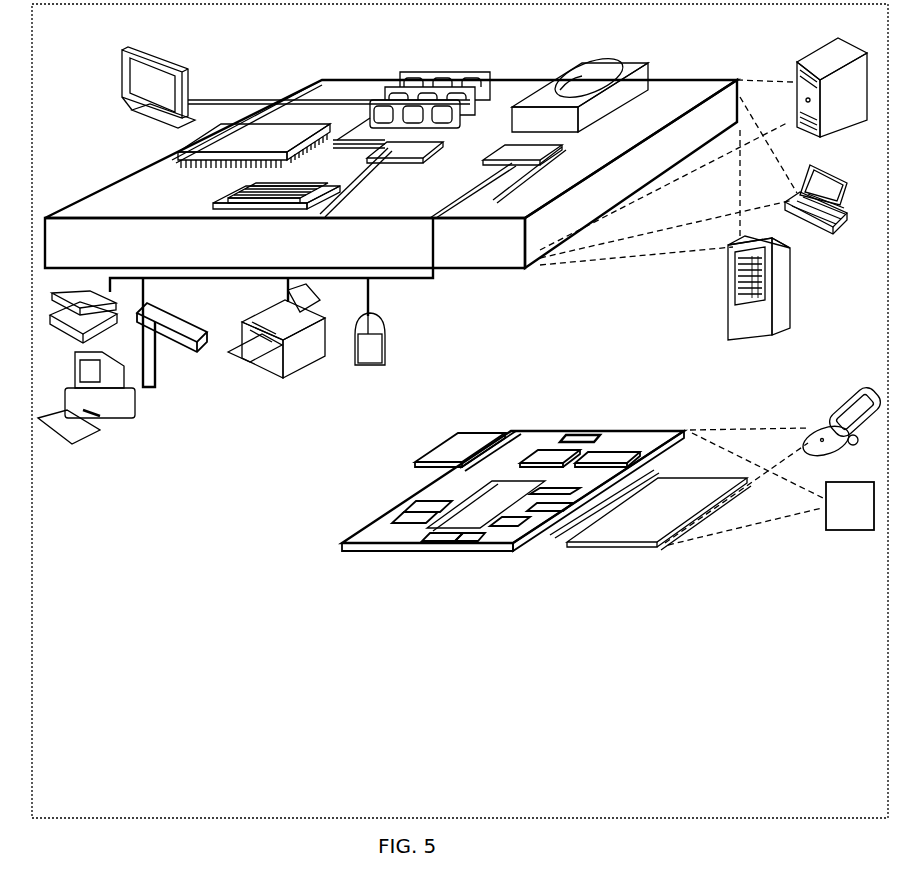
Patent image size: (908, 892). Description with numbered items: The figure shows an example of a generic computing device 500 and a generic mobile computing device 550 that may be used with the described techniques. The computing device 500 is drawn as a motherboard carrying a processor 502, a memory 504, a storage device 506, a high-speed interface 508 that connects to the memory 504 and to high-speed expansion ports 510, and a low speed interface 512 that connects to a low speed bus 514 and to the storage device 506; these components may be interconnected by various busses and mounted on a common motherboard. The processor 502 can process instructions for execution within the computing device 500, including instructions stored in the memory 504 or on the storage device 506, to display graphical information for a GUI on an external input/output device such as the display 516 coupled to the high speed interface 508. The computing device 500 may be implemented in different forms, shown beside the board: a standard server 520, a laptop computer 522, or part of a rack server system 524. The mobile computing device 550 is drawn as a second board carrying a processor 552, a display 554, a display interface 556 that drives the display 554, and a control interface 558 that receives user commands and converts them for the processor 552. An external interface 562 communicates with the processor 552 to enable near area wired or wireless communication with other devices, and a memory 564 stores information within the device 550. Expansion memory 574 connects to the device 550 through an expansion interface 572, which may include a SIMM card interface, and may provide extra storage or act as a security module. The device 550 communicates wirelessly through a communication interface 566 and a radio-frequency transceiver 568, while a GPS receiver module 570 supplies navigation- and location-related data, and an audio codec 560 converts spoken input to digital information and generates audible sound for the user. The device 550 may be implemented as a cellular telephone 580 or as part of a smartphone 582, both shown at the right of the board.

The computing device 500 is at (264, 60).
The processor 502 is at (178, 158).
The memory 504 is at (410, 72).
The storage device 506 is at (568, 64).
The high-speed interface 508 is at (370, 118).
The high-speed expansion ports 510 is at (228, 198).
The low speed interface 512 is at (522, 150).
The low speed bus 514 is at (435, 222).
The display 516 is at (127, 47).
The standard server 520 is at (792, 63).
The laptop computer 522 is at (818, 167).
The rack server system 524 is at (730, 293).
The mobile computing device 550 is at (496, 410).
The processor 552 is at (455, 546).
The display 554 is at (666, 548).
The display interface 556 is at (522, 548).
The control interface 558 is at (546, 535).
The audio codec 560 is at (565, 523).
The external interface 562 is at (440, 545).
The memory 564 is at (403, 500).
The communication interface 566 is at (546, 450).
The transceiver 568 is at (600, 452).
The GPS receiver module 570 is at (581, 435).
The expansion interface 572 is at (502, 447).
The expansion memory 574 is at (446, 445).
The cellular telephone 580 is at (842, 386).
The smartphone 582 is at (832, 480).